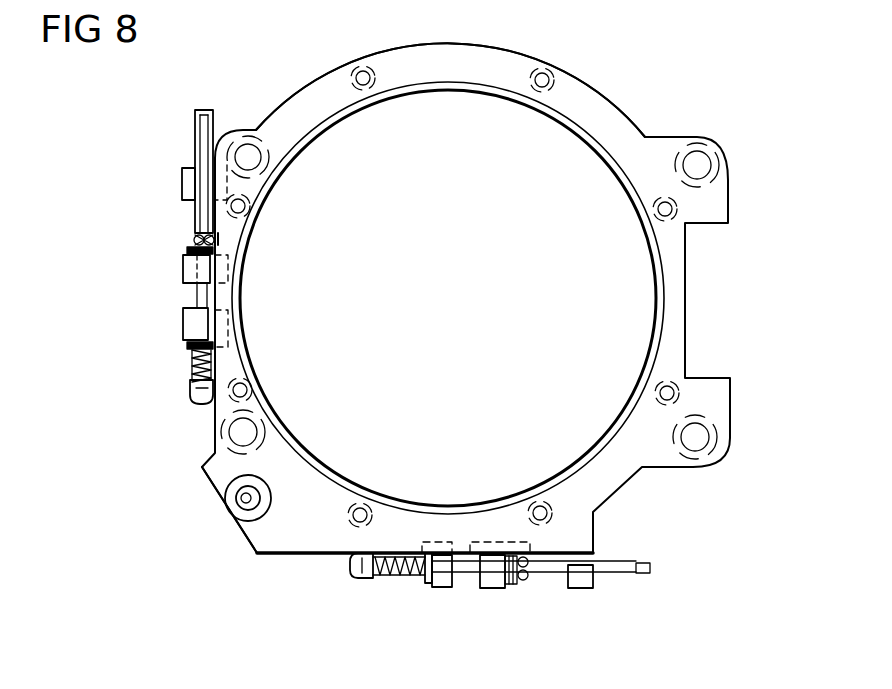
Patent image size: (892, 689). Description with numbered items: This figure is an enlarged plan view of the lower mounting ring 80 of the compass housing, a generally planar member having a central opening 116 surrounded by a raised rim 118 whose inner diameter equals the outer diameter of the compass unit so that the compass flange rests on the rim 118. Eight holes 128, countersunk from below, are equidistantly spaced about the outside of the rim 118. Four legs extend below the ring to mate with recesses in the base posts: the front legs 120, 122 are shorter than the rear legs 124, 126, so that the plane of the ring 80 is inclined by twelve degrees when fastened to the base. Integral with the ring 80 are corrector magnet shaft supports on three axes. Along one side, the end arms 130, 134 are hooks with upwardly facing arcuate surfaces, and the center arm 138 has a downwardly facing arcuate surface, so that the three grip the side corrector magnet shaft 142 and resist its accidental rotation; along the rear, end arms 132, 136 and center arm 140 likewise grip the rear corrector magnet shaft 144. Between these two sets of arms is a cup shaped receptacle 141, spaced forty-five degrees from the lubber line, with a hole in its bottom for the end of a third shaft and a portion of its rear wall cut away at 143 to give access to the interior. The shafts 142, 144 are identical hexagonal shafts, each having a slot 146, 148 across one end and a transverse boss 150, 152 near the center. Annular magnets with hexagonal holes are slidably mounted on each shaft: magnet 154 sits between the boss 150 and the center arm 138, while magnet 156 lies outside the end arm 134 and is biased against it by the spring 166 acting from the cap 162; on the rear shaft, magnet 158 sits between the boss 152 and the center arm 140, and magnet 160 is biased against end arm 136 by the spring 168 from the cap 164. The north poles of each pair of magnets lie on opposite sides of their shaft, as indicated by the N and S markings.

The lower mounting ring 80 is at (262, 560).
The central opening 116 is at (580, 140).
The raised rim 118 is at (600, 143).
The front leg 120 is at (702, 142).
The front leg 122 is at (716, 452).
The rear leg 124 is at (248, 134).
The rear leg 126 is at (232, 438).
The holes 128 is at (246, 205).
The end arm 130 is at (593, 589).
The end arm 132 is at (183, 172).
The end arm 134 is at (447, 589).
The end arm 136 is at (183, 313).
The center arm 138 is at (490, 589).
The center arm 140 is at (183, 280).
The cup shaped receptacle 141 is at (240, 522).
The side corrector magnet shaft 142 is at (468, 582).
The cut away 143 is at (207, 470).
The rear corrector magnet shaft 144 is at (192, 296).
The slot 146 is at (650, 573).
The slot 148 is at (207, 112).
The boss 150 is at (530, 580).
The boss 152 is at (192, 237).
The magnet 154 is at (515, 585).
The magnet 156 is at (430, 586).
The magnet 158 is at (185, 246).
The magnet 160 is at (186, 346).
The cap 162 is at (353, 567).
The cap 164 is at (195, 398).
The spring 166 is at (388, 578).
The spring 168 is at (190, 383).